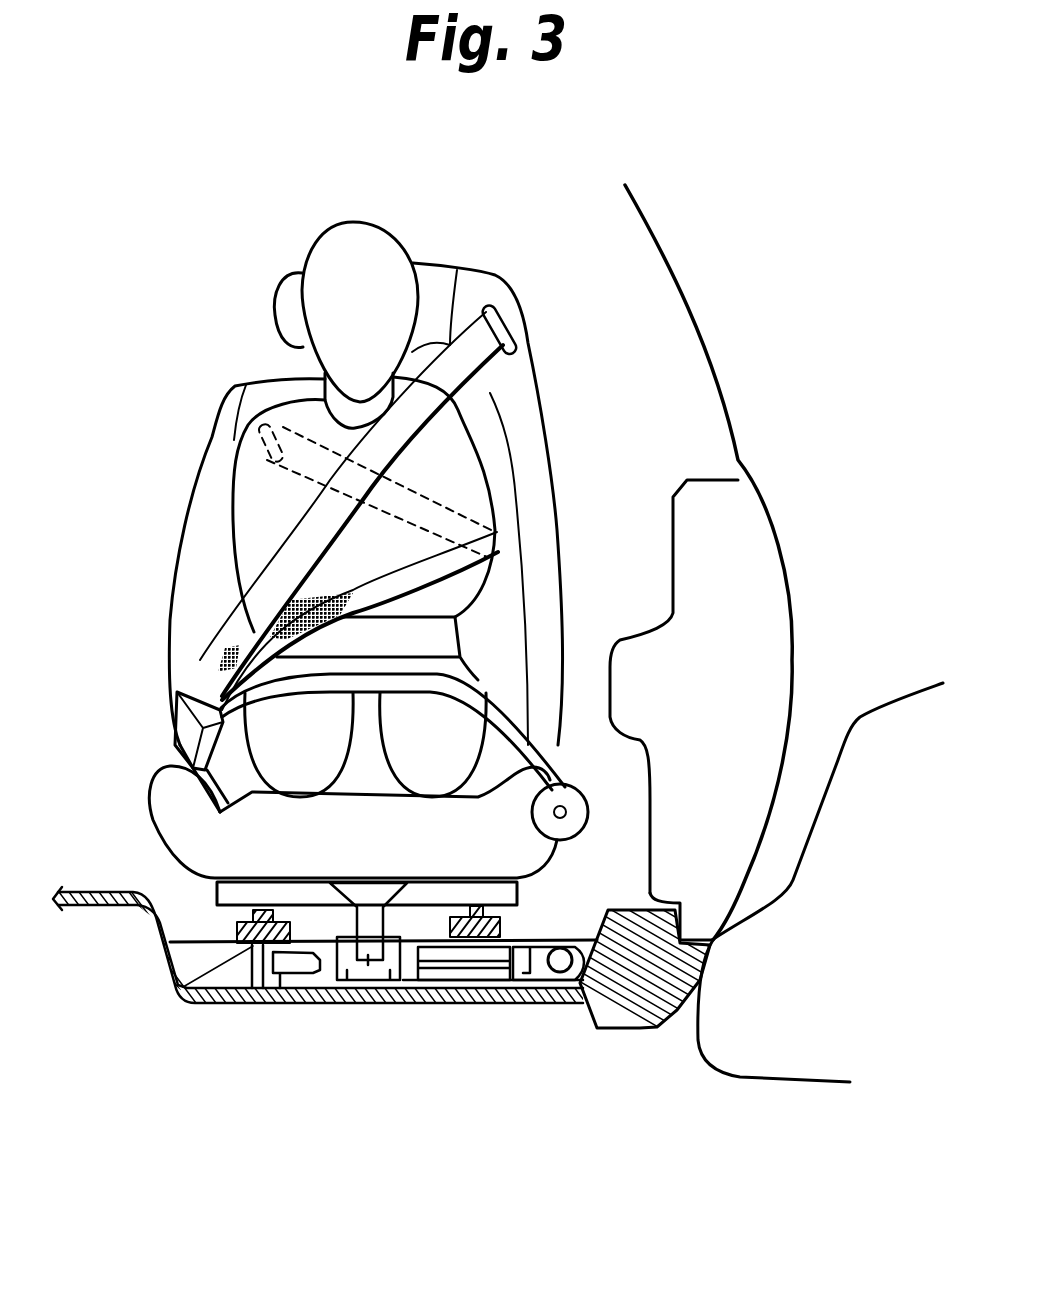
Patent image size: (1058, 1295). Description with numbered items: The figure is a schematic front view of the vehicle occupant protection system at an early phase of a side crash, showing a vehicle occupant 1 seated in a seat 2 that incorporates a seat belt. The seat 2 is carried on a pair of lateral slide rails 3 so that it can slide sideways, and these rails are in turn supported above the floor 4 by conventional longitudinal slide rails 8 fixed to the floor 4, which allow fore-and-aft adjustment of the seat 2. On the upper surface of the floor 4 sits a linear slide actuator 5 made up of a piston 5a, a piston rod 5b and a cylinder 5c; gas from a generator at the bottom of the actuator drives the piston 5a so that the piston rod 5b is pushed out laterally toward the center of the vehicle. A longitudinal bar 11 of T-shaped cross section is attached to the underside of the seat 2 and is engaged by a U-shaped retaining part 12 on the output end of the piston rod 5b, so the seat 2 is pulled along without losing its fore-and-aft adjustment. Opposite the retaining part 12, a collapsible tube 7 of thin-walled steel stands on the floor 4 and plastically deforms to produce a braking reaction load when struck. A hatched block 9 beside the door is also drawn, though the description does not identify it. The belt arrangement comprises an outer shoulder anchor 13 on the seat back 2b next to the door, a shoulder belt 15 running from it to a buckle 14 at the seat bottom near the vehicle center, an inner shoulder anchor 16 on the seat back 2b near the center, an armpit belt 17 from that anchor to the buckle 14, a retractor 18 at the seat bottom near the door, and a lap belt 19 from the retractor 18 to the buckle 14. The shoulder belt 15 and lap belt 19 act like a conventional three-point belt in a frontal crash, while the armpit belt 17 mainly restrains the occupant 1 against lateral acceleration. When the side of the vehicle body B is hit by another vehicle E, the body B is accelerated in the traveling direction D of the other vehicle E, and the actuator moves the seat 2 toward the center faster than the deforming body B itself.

The vehicle occupant 1 is at (240, 498).
The seat 2 is at (157, 805).
The seat back 2b is at (218, 425).
The lateral slide rails 3 is at (220, 895).
The floor 4 is at (147, 930).
The linear slide actuator 5 is at (425, 1060).
The piston 5a is at (540, 1003).
The piston rod 5b is at (507, 1000).
The cylinder 5c is at (470, 1000).
The collapsible tube 7 is at (277, 982).
The longitudinal slide rails 8 is at (231, 988).
The anchor bracket 9 is at (660, 902).
The longitudinal bar 11 is at (368, 990).
The U-shaped retaining part 12 is at (350, 992).
The outer shoulder anchor 13 is at (500, 318).
The buckle 14 is at (178, 718).
The shoulder belt 15 is at (491, 394).
The inner shoulder anchor 16 is at (263, 425).
The armpit belt 17 is at (497, 545).
The retractor 18 is at (570, 827).
The lap belt 19 is at (500, 708).
The vehicle body B is at (785, 652).
The other vehicle E is at (918, 700).
The traveling direction D is at (735, 1017).